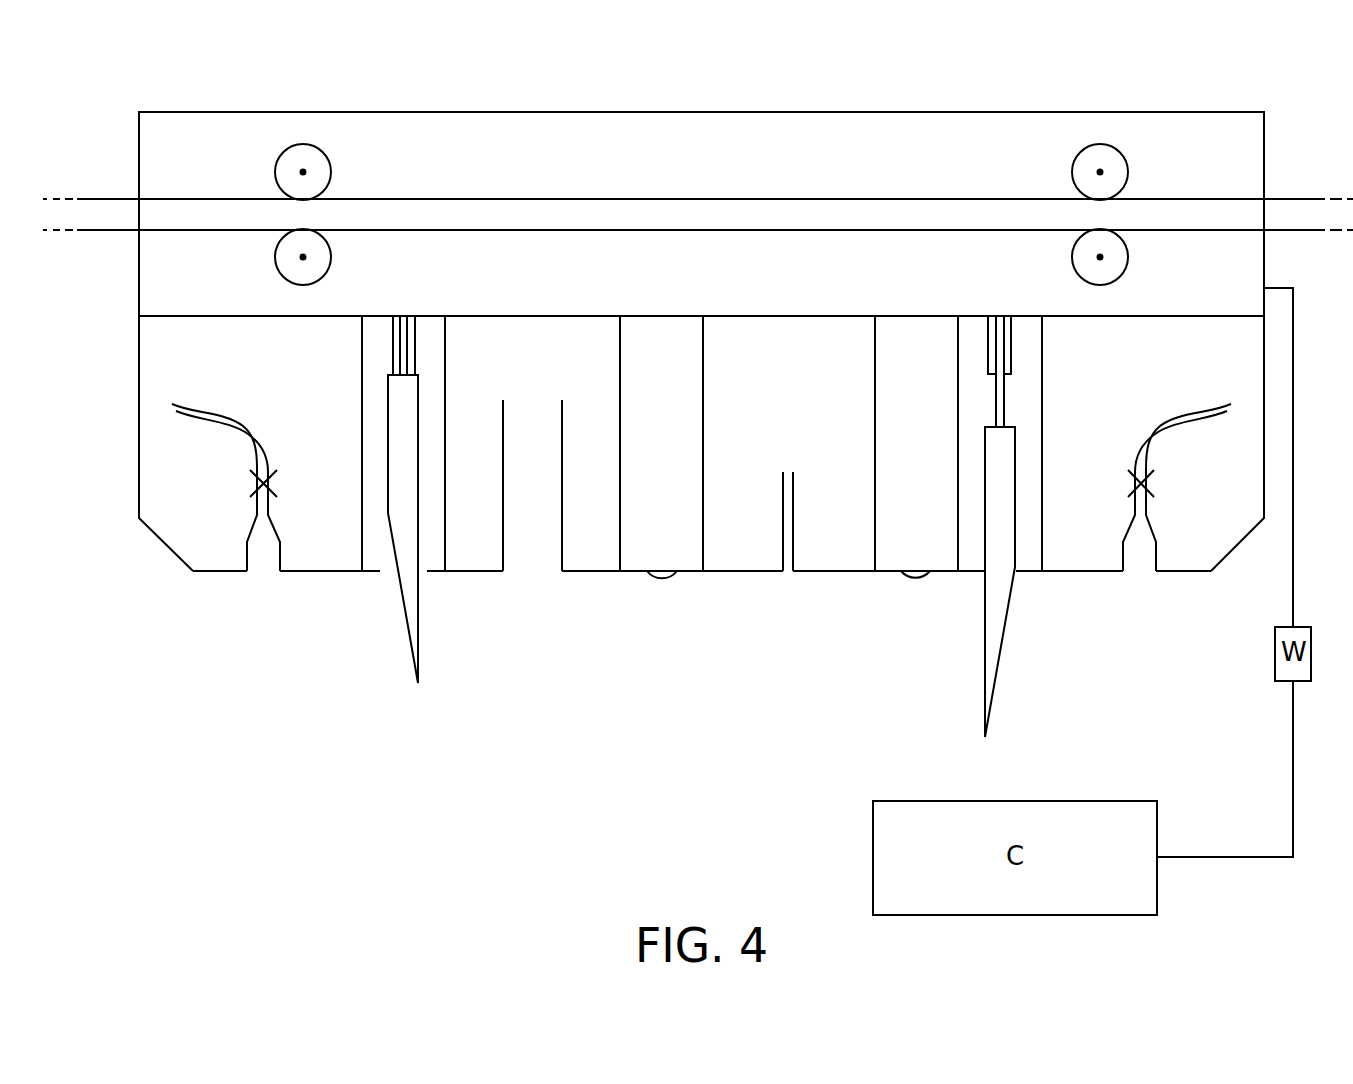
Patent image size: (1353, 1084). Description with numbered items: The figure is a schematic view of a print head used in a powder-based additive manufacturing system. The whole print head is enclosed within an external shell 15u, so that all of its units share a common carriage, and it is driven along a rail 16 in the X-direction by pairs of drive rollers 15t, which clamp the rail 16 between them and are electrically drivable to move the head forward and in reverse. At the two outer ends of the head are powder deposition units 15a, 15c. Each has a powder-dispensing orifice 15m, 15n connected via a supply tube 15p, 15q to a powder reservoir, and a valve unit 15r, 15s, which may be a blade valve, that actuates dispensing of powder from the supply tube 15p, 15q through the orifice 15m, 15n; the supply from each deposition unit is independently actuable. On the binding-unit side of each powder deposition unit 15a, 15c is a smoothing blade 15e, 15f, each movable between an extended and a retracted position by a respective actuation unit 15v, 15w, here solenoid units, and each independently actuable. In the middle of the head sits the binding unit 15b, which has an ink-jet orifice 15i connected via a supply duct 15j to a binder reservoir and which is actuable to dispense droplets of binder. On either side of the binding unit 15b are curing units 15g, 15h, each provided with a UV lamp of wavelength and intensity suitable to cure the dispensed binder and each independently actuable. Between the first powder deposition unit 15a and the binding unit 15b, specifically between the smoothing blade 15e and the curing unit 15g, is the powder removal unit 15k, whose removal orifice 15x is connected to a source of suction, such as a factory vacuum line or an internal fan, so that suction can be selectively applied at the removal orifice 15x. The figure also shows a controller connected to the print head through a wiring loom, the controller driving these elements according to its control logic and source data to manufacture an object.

The external shell 15u is at (834, 110).
The rail 16 is at (1290, 195).
The drive rollers 15t is at (336, 172).
The powder deposition unit 15a is at (261, 443).
The powder removal unit 15k is at (465, 443).
The removal orifice 15x is at (532, 578).
The curing unit 15g is at (632, 447).
The binding unit 15b is at (789, 443).
The ink-jet orifice 15i is at (787, 577).
The supply duct 15j is at (800, 476).
The curing unit 15h is at (930, 447).
The powder deposition unit 15c is at (1113, 443).
The supply tube 15p is at (261, 424).
The valve unit 15r is at (281, 477).
The powder-dispensing orifice 15m is at (258, 577).
The smoothing blade 15e is at (407, 653).
The actuation unit 15v is at (423, 368).
The smoothing blade 15f is at (1011, 653).
The actuation unit 15w is at (982, 370).
The supply tube 15q is at (1138, 425).
The valve unit 15s is at (1156, 481).
The powder-dispensing orifice 15n is at (1142, 577).